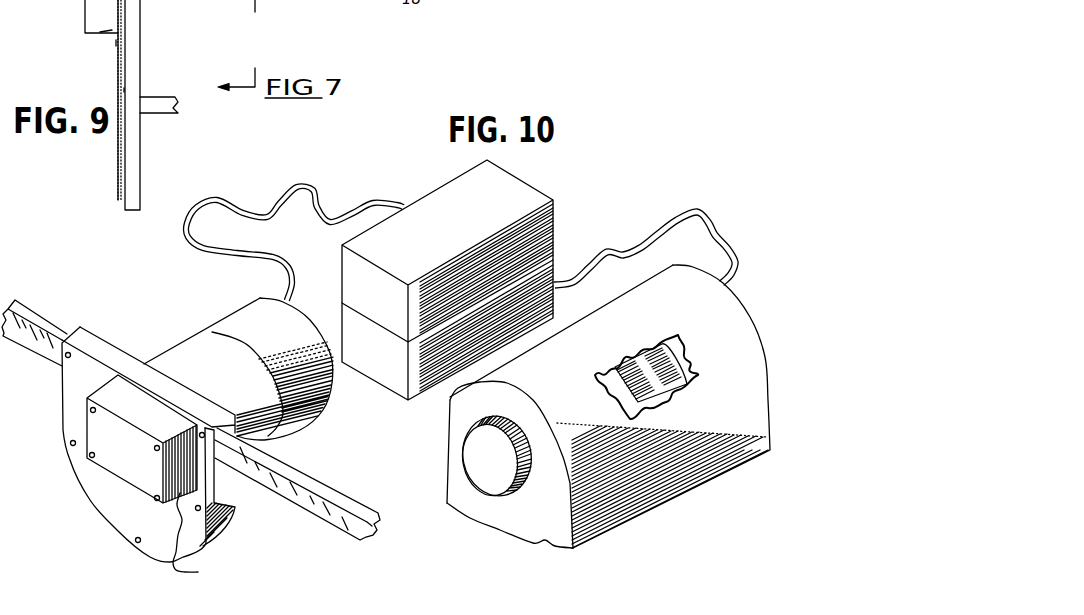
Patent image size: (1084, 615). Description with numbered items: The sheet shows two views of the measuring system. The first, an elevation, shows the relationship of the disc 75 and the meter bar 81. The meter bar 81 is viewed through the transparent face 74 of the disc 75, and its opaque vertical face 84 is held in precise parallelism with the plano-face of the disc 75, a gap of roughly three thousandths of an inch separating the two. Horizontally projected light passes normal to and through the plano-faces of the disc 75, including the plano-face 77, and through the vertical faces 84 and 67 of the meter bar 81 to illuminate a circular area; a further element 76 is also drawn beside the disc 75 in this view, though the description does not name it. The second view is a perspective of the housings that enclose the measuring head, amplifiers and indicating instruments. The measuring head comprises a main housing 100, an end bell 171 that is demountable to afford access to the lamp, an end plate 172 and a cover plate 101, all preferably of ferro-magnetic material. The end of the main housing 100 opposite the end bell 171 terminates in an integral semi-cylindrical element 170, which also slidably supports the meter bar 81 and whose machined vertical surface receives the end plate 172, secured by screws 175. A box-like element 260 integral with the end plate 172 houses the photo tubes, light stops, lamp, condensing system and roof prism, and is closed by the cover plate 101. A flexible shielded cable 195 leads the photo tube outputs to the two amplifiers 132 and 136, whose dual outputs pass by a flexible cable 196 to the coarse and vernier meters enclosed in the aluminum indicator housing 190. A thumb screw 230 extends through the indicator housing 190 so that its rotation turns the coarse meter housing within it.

In FIG. 9, the vertical face 67 is at (90, 33).
In FIG. 9, the meter bar 81 is at (87, 37).
In FIG. 10, the meter bar 81 is at (24, 312).
In FIG. 9, the vertical face 84 is at (117, 43).
In FIG. 9, the plano-face 77 is at (124, 90).
In FIG. 9, the transparent face 74 is at (140, 50).
In FIG. 9, the rail bar 76 is at (152, 110).
In FIG. 9, the disc 75 is at (133, 177).
In FIG. 10, the flexible shielded cable 195 is at (318, 187).
In FIG. 10, the amplifier 132 is at (527, 198).
In FIG. 10, the amplifier 136 is at (382, 373).
In FIG. 10, the flexible cable 196 is at (707, 215).
In FIG. 10, the indicator housing 190 is at (737, 313).
In FIG. 10, the thumb screw 230 is at (487, 477).
In FIG. 10, the end bell 171 is at (260, 308).
In FIG. 10, the main housing 100 is at (186, 352).
In FIG. 10, the semi-cylindrical element 170 is at (93, 340).
In FIG. 10, the end plate 172 is at (62, 408).
In FIG. 10, the screws 175 is at (72, 444).
In FIG. 10, the cover plate 101 is at (113, 462).
In FIG. 10, the box-like element 260 is at (201, 538).